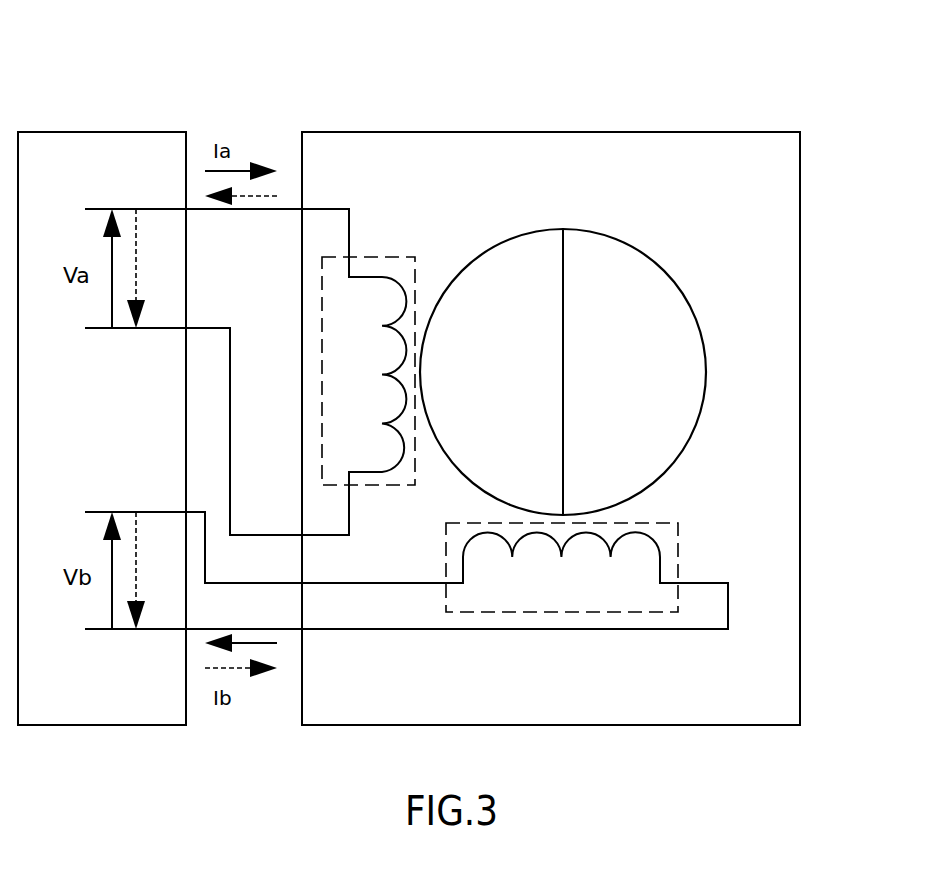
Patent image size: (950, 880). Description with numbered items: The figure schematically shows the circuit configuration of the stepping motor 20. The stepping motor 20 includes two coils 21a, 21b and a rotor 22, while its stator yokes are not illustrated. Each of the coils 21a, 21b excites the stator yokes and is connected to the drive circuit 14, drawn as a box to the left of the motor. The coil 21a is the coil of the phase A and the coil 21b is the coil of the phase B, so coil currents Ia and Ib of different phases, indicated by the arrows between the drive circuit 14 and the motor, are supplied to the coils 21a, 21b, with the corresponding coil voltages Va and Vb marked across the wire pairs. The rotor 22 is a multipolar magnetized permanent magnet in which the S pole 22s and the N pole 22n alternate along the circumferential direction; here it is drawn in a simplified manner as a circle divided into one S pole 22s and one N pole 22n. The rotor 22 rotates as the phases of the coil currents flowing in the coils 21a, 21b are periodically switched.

The drive circuit 14 is at (125, 130).
The stepping motor 20 is at (648, 130).
The coil 21a is at (387, 255).
The coil 21b is at (678, 548).
The rotor 22 is at (655, 258).
The S pole 22s is at (497, 280).
The N pole 22n is at (650, 423).